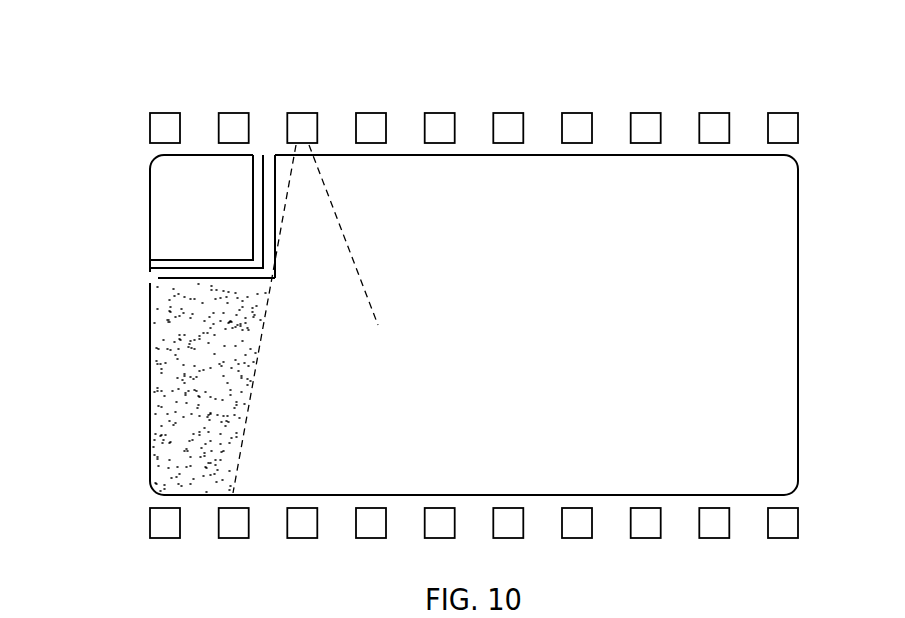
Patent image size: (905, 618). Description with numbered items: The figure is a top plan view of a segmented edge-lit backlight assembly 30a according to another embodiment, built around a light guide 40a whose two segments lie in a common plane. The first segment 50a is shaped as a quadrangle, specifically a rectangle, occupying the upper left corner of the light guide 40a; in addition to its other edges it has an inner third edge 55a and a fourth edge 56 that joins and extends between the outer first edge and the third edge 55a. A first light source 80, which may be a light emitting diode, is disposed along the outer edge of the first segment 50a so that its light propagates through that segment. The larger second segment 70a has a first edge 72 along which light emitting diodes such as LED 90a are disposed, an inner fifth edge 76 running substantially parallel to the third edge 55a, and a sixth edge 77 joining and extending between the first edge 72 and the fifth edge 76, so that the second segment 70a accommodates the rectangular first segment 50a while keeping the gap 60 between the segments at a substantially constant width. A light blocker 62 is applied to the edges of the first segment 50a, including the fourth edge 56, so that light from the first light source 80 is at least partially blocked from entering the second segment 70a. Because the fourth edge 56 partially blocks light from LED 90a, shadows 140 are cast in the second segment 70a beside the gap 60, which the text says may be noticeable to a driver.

The backlight assembly 30a is at (128, 75).
The first light source 80 is at (248, 103).
The fourth edge 56 is at (250, 180).
The sixth edge 77 is at (273, 175).
The LED 90a is at (305, 113).
The light guide 40a is at (537, 155).
The first edge 72 is at (742, 153).
The first segment 50a is at (173, 183).
The third edge 55a is at (190, 257).
The light blocker 62 is at (255, 232).
The fifth edge 76 is at (180, 278).
The gap 60 is at (146, 277).
The second segment 70a is at (750, 245).
The shadows 140 is at (188, 407).